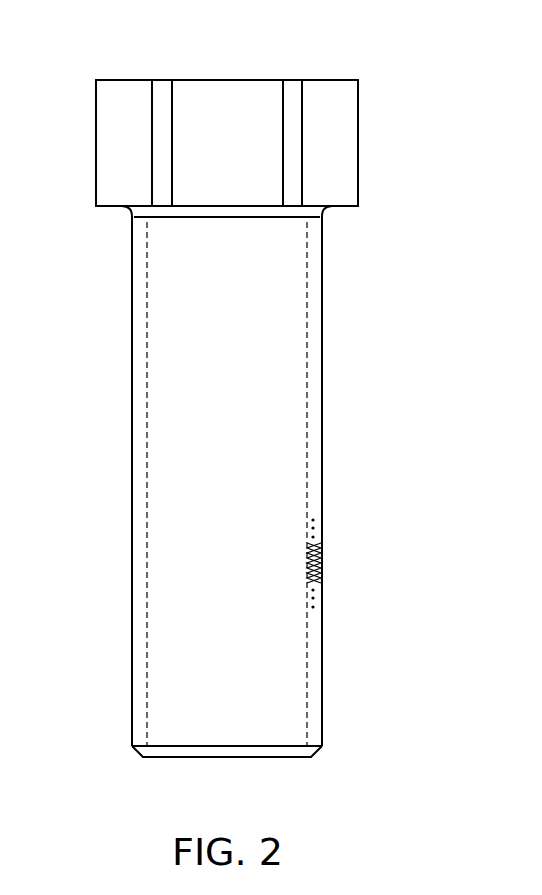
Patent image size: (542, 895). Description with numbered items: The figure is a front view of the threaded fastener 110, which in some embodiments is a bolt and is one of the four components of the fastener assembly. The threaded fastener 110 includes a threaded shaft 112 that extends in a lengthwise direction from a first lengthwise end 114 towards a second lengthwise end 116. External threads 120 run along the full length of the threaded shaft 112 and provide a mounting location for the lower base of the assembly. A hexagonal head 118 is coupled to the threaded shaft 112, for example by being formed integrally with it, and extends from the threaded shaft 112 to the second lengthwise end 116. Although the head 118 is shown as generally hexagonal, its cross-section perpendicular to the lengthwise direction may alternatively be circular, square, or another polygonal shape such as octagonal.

The threaded fastener 110 is at (427, 53).
The threaded shaft 112 is at (323, 343).
The first lengthwise end 114 is at (226, 757).
The second lengthwise end 116 is at (247, 80).
The hexagonal head 118 is at (112, 151).
The external threads 120 is at (322, 560).